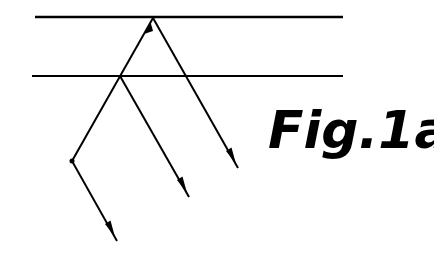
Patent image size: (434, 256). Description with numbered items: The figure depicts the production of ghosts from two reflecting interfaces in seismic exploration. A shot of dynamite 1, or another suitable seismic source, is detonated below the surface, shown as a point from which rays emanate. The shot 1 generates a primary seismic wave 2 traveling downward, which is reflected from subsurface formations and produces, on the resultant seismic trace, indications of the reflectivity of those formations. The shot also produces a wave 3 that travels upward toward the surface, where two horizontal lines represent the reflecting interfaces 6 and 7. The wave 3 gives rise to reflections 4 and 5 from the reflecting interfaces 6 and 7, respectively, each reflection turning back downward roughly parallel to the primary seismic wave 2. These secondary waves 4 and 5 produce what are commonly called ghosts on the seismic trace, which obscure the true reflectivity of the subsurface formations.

The shot of dynamite 1 is at (69, 159).
The primary seismic wave 2 is at (95, 207).
The wave 3 is at (90, 124).
The reflection 4 is at (150, 127).
The reflection 5 is at (178, 63).
The reflecting interface 6 is at (265, 78).
The reflecting interface 7 is at (283, 19).